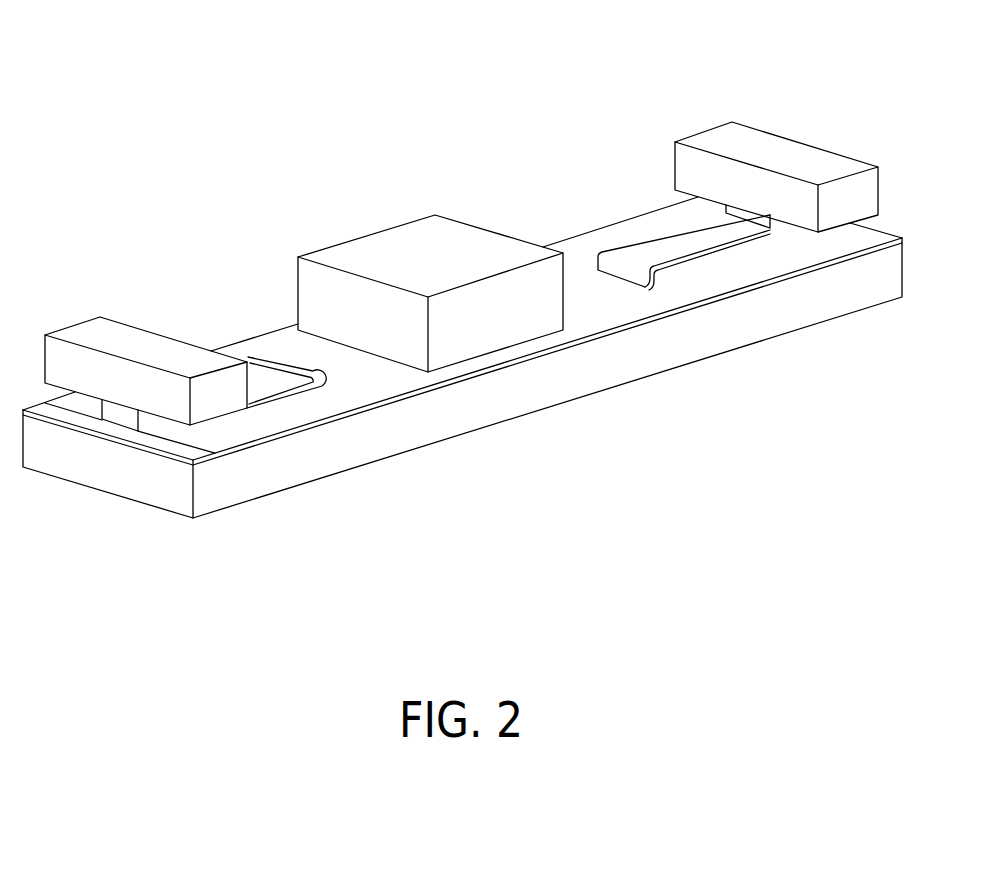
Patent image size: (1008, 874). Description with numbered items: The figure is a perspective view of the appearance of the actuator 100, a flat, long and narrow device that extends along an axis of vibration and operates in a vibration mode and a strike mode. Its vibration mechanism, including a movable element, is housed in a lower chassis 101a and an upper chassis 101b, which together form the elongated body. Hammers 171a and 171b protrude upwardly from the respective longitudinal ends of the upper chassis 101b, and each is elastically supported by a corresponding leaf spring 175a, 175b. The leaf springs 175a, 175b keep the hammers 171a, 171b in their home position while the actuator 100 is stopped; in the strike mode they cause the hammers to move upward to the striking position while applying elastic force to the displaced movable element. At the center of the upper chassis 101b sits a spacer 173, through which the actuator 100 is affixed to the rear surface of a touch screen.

The actuator 100 is at (606, 94).
The lower chassis 101a is at (372, 444).
The upper chassis 101b is at (561, 238).
The hammer 171a is at (152, 340).
The hammer 171b is at (768, 142).
The spacer 173 is at (421, 238).
The leaf spring 175a is at (257, 372).
The leaf spring 175b is at (635, 257).